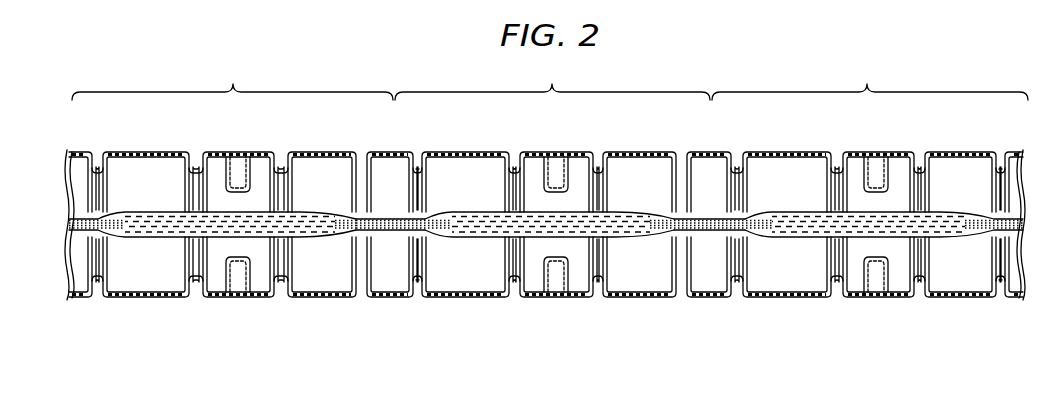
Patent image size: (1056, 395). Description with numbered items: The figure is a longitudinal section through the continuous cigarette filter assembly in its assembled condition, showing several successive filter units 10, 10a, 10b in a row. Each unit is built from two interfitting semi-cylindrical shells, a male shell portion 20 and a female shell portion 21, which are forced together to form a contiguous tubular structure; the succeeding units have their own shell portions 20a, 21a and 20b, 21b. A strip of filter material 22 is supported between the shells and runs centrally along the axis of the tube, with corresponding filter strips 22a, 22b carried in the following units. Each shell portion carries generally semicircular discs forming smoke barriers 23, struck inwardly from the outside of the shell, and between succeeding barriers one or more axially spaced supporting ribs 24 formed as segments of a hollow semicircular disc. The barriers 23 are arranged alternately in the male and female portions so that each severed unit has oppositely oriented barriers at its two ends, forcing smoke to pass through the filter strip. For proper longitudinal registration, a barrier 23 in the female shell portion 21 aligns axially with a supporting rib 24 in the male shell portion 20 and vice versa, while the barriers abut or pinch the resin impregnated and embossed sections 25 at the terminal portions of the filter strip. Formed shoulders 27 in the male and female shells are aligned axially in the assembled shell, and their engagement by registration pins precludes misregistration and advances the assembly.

The filter unit 10 is at (232, 76).
The filter unit 10a is at (552, 75).
The filter unit 10b is at (870, 75).
The male shell portion 20 is at (168, 298).
The male shell portion 20a is at (479, 298).
The male shell portion 20b is at (890, 298).
The female shell portion 21 is at (162, 151).
The female shell portion 21a is at (473, 151).
The female shell portion 21b is at (788, 151).
The filter strip 22 is at (315, 214).
The filter strip 22a is at (637, 215).
The filter strip 22b is at (957, 216).
The smoke barrier 23 is at (372, 171).
The supporting rib 24 is at (597, 172).
The resin impregnated and embossed section 25 is at (389, 233).
The formed shoulder 27 is at (251, 176).